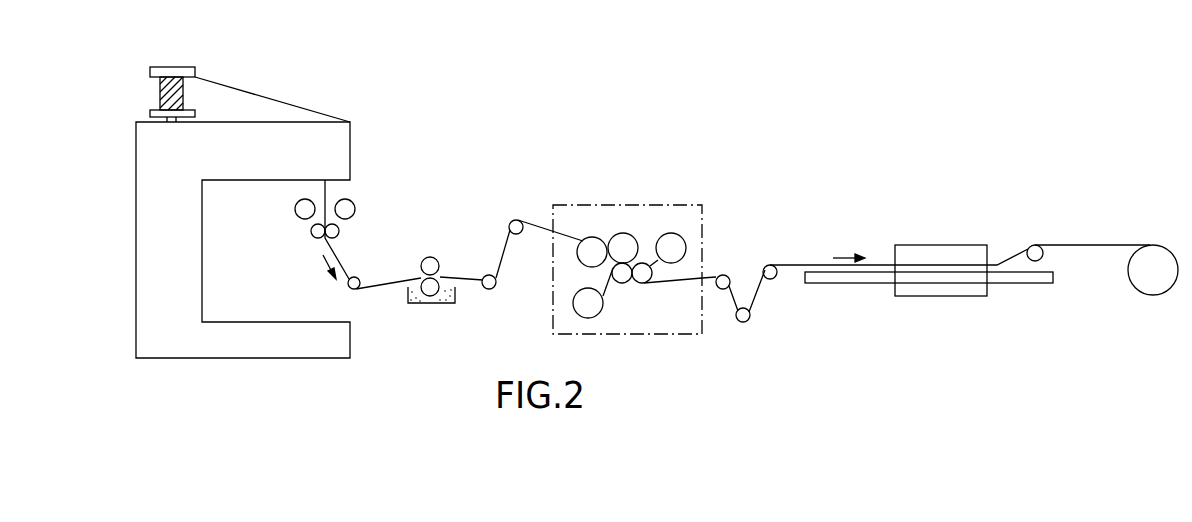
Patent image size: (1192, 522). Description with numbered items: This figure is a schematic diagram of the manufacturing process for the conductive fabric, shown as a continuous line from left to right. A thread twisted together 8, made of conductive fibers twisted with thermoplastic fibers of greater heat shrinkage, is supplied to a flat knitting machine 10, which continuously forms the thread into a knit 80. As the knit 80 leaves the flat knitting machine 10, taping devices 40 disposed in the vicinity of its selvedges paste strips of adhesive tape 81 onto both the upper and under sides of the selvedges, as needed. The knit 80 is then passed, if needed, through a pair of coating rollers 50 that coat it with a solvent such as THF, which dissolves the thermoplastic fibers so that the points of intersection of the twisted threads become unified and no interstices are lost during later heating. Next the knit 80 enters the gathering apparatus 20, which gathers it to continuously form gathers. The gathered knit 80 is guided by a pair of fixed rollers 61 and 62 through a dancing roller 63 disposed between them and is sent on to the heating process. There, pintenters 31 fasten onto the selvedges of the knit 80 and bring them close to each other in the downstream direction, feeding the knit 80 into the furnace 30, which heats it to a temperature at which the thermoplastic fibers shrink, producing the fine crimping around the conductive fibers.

The thread twisted together 8 is at (230, 91).
The flat knitting machine 10 is at (147, 191).
The gathering apparatus 20 is at (626, 205).
The furnace 30 is at (958, 247).
The pintenters 31 is at (862, 283).
The taping device 40 is at (290, 223).
The coating rollers 50 is at (437, 258).
The fixed roller 61 is at (724, 290).
The fixed roller 62 is at (773, 280).
The dancing roller 63 is at (745, 322).
The knit 80 is at (327, 188).
The adhesive tape 81 is at (310, 222).